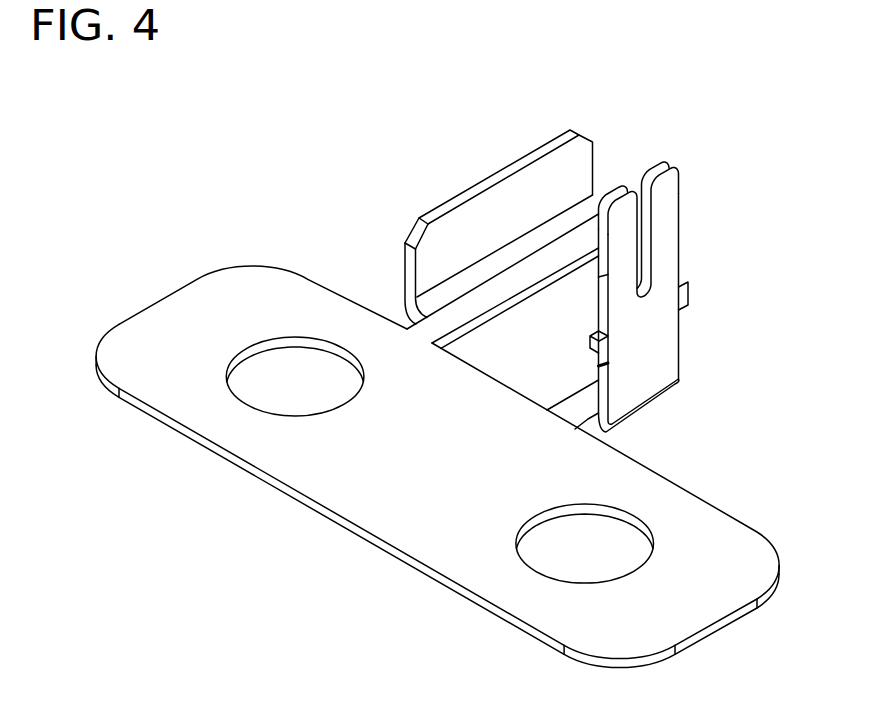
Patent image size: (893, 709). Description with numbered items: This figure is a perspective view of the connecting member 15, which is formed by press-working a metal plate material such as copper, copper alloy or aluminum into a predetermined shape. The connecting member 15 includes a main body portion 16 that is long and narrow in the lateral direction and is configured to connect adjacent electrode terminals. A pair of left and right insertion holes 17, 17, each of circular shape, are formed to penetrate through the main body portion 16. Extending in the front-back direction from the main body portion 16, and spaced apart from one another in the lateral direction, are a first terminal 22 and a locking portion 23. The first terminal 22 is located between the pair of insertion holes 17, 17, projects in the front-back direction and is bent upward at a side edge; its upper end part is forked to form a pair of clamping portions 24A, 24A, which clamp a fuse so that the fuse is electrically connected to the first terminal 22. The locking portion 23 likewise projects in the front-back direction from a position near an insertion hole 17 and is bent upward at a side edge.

The connecting member 15 is at (328, 468).
The main body portion 16 is at (383, 503).
The insertion hole 17 is at (293, 346).
The first terminal 22 is at (662, 367).
The locking portion 23 is at (488, 207).
The clamping portion 24A is at (622, 203).